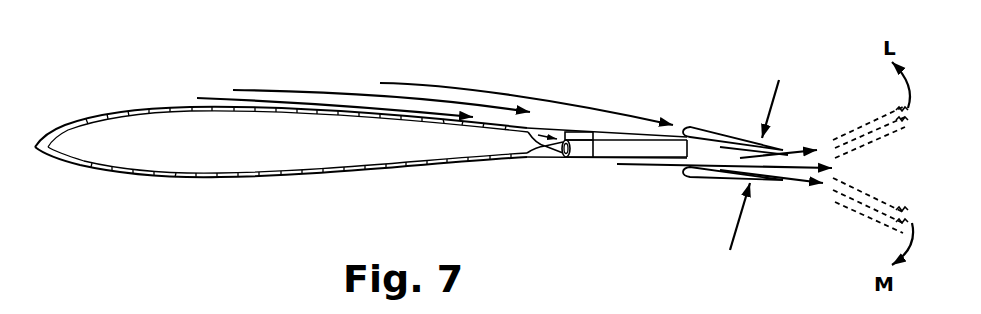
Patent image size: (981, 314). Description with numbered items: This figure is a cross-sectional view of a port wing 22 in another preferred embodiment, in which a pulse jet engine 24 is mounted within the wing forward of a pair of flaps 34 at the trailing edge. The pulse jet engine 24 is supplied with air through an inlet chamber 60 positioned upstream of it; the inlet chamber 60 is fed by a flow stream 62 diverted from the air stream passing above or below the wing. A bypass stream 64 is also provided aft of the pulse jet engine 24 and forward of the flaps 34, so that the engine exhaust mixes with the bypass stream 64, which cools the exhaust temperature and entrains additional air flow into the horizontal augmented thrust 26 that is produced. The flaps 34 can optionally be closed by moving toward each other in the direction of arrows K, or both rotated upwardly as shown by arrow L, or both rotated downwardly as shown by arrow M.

The port wing 22 is at (123, 110).
The flow stream 62 is at (287, 90).
The bypass stream 64 is at (635, 112).
The pulse jet engine 24 is at (582, 148).
The inlet chamber 60 is at (550, 152).
The flaps 34 is at (727, 130).
The horizontal augmented thrust 26 is at (790, 162).